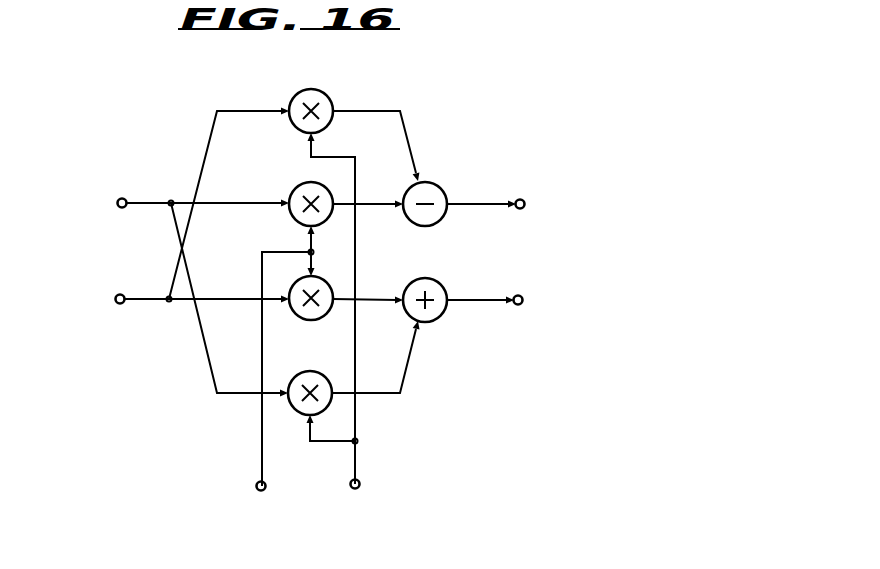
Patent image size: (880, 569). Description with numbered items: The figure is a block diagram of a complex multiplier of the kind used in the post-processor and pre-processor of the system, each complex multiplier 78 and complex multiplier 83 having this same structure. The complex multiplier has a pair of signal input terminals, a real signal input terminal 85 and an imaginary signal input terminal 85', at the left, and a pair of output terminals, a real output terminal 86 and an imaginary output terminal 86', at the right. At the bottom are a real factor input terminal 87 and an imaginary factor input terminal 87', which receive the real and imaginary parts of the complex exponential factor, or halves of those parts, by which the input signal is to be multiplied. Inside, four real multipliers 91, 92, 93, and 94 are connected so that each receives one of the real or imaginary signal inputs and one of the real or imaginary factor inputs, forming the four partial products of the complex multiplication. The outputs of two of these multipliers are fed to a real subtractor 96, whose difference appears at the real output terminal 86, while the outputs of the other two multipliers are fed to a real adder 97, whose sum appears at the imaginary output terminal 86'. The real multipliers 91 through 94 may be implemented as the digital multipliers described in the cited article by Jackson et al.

The real signal input terminal 85 is at (82, 205).
The imaginary signal input terminal 85' is at (77, 299).
The real output terminal 86 is at (557, 214).
The imaginary output terminal 86' is at (562, 304).
The real factor input terminal 87 is at (224, 499).
The imaginary factor input terminal 87' is at (388, 501).
The real multiplier 91 is at (326, 95).
The real multiplier 92 is at (297, 185).
The real multiplier 93 is at (302, 319).
The real multiplier 94 is at (298, 414).
The real subtractor 96 is at (440, 188).
The real adder 97 is at (440, 283).
The complex multiplier 78 is at (482, 366).
The complex multiplier 83 is at (636, 400).